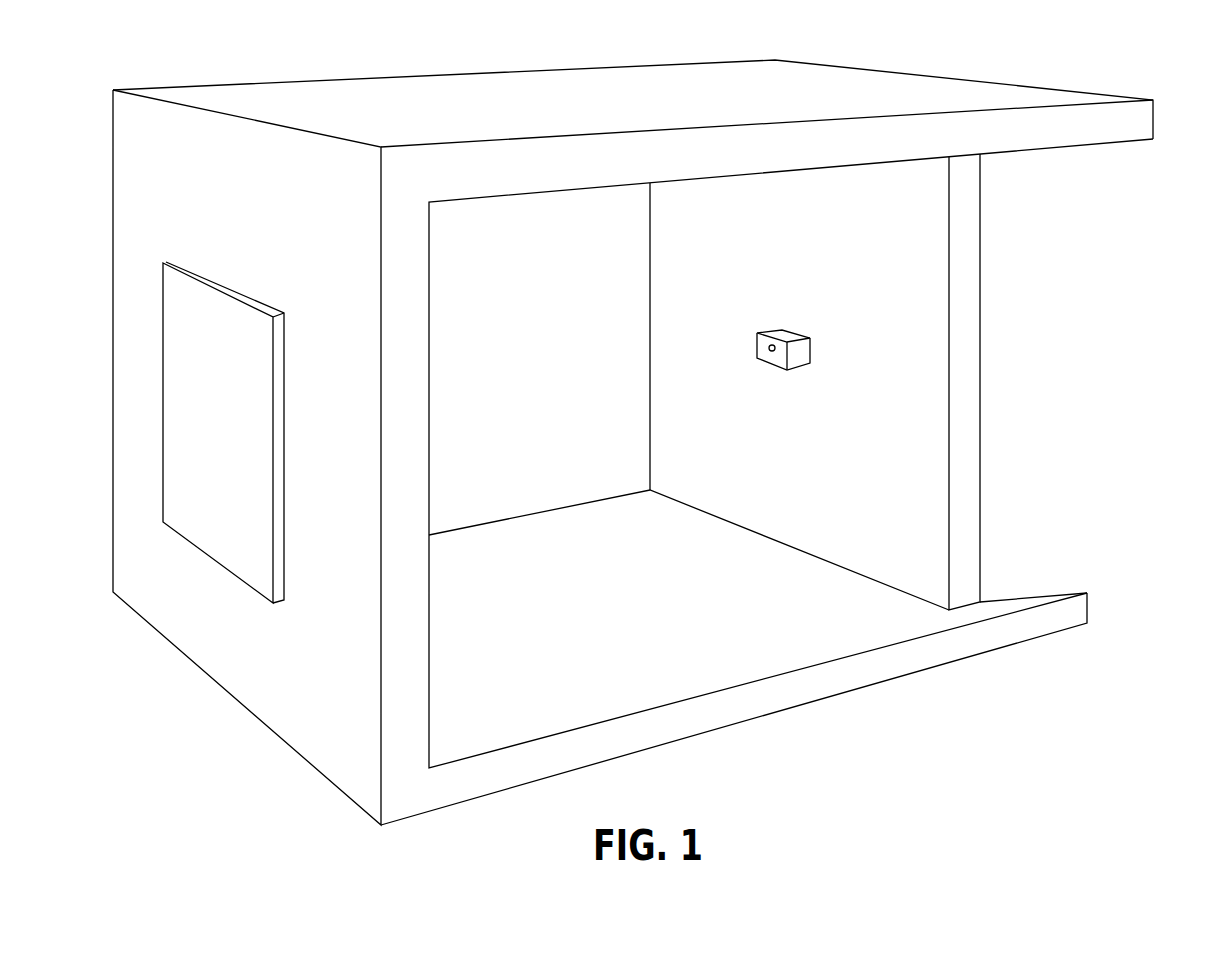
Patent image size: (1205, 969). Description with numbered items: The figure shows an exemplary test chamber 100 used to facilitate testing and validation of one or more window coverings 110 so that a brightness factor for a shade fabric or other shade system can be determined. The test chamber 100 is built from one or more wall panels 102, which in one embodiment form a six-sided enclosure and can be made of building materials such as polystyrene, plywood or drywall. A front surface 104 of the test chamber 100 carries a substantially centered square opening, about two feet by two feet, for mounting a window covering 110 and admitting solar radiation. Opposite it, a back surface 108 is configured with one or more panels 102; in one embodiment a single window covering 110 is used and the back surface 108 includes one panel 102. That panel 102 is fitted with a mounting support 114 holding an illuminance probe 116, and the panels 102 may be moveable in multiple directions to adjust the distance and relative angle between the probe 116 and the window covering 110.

The test chamber 100 is at (1093, 72).
The wall panel 102 is at (397, 757).
The front surface 104 is at (433, 683).
The back surface 108 is at (843, 488).
The window covering 110 is at (223, 448).
The mounting support 114 is at (800, 354).
The illuminance probe 116 is at (775, 340).